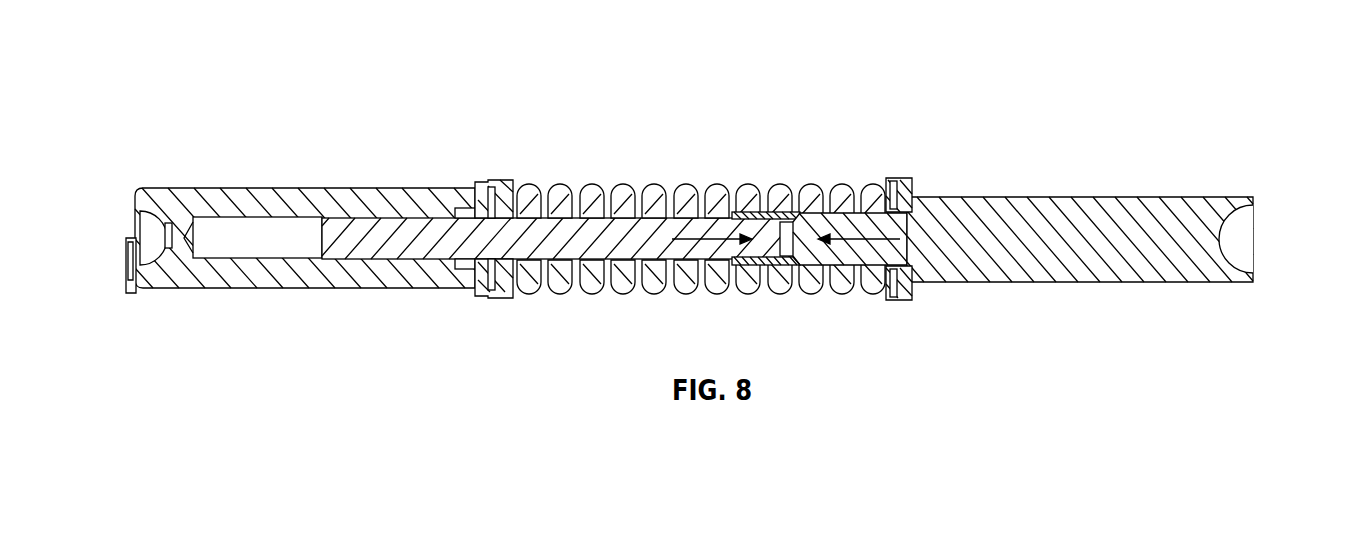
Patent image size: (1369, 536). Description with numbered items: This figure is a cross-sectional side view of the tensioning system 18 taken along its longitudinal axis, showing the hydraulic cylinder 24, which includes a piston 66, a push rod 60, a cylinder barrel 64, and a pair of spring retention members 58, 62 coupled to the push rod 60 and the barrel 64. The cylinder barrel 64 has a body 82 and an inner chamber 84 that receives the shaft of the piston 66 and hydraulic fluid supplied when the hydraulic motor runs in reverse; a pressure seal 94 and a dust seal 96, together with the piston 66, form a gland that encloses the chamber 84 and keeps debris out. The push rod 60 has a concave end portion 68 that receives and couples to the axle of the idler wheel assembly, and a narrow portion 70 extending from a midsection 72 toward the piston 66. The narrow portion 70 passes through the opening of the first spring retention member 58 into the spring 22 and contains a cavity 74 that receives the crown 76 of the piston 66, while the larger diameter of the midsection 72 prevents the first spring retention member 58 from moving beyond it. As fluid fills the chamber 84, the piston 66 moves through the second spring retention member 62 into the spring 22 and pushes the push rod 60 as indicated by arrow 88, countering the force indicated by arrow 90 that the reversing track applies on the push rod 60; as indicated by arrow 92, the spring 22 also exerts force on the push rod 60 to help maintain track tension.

The tensioning system 18 is at (608, 92).
The spring 22 is at (681, 197).
The hydraulic cylinder 24 is at (366, 288).
The first spring retention member 58 is at (897, 184).
The push rod 60 is at (1098, 195).
The second spring retention member 62 is at (490, 178).
The cylinder barrel 64 is at (297, 190).
The piston 66 is at (600, 236).
The concave end portion 68 is at (1235, 240).
The narrow portion 70 is at (870, 190).
The midsection 72 is at (915, 290).
The cavity 74 is at (805, 190).
The crown 76 is at (781, 262).
The body 82 is at (215, 194).
The inner chamber 84 is at (250, 250).
The arrow 88 is at (704, 244).
The arrow 90 is at (862, 252).
The arrow 92 is at (797, 162).
The pressure seal 94 is at (446, 262).
The dust seal 96 is at (486, 286).